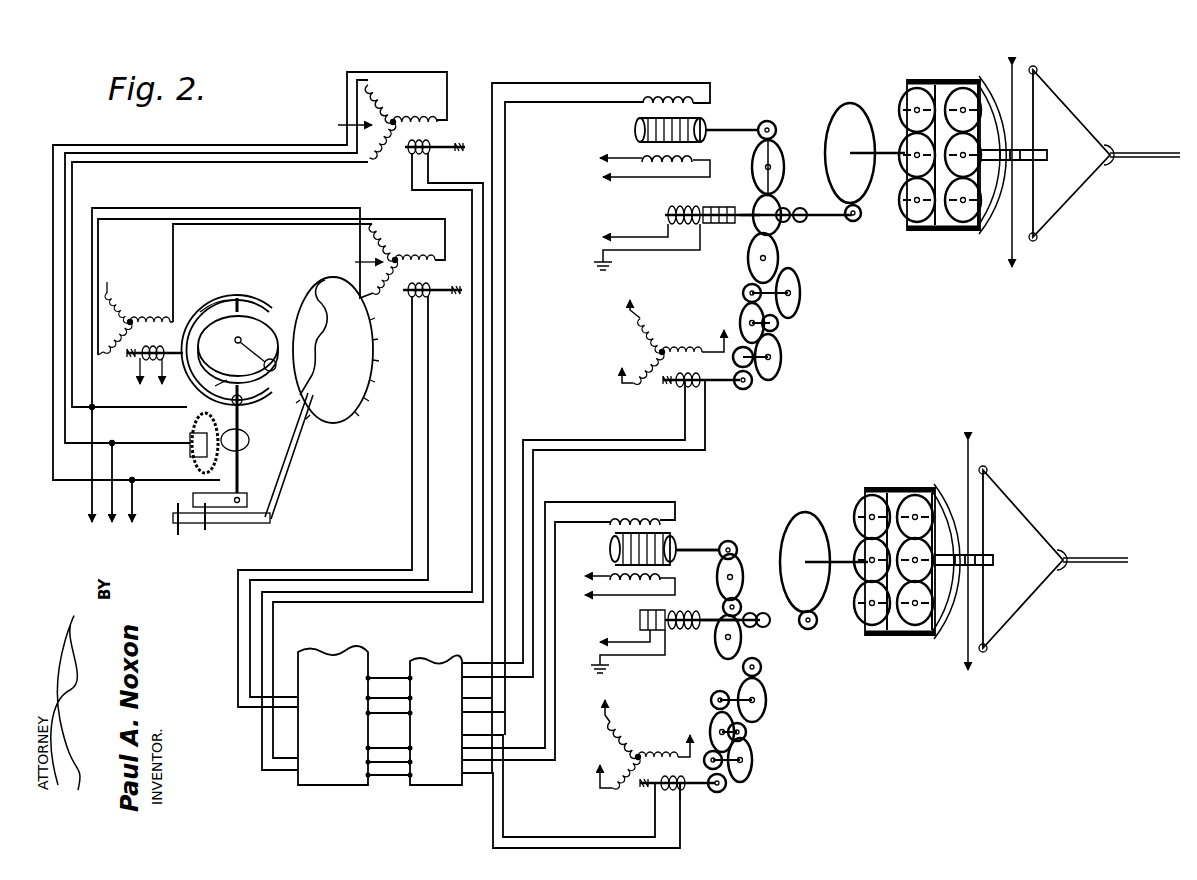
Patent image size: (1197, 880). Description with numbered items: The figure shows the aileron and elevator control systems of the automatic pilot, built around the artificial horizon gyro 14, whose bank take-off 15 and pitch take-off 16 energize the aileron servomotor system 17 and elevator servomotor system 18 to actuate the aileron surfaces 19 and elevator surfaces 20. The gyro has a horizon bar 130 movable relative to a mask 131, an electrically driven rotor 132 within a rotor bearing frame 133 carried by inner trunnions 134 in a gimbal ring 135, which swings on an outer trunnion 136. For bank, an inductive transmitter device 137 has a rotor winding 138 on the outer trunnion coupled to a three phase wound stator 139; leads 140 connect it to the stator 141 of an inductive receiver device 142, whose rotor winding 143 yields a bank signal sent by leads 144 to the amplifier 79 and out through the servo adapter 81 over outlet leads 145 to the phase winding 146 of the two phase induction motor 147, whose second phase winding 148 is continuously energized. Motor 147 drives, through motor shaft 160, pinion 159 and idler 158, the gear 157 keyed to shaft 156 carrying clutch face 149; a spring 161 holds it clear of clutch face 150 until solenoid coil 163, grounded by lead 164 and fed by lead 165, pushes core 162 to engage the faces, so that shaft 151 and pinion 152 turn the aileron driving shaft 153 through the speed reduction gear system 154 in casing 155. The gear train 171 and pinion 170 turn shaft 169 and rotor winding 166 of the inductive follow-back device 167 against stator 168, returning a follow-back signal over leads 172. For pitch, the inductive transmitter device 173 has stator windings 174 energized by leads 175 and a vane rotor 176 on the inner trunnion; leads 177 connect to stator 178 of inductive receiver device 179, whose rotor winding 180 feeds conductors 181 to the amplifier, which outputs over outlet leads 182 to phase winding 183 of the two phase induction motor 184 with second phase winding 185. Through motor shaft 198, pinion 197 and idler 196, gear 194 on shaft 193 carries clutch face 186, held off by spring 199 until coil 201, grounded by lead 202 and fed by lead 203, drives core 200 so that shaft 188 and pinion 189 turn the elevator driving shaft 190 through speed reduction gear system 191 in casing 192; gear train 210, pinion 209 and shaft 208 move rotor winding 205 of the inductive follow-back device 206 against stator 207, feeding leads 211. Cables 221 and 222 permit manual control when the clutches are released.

The artificial horizon gyro 14 is at (259, 310).
The bank take-off 15 is at (155, 355).
The pitch take-off 16 is at (244, 403).
The aileron servomotor system 17 is at (790, 112).
The elevator servomotor system 18 is at (776, 512).
The aileron surfaces 19 is at (1140, 159).
The elevator surfaces 20 is at (1110, 563).
The amplifier 79 is at (333, 715).
The servo adapter 81 is at (436, 720).
The horizon bar 130 is at (292, 462).
The mask 131 is at (358, 402).
The rotor 132 is at (247, 354).
The rotor bearing frame 133 is at (238, 349).
The inner trunnions 134 is at (237, 298).
The gimbal ring 135 is at (198, 312).
The outer trunnion 136 is at (215, 386).
The inductive transmitter device 137 is at (112, 290).
The rotor winding 138 is at (136, 360).
The three phase wound stator 139 is at (150, 315).
The leads 140 is at (248, 216).
The three phase wound stator 141 is at (410, 258).
The inductive receiver device 142 is at (351, 258).
The rotor winding 143 is at (410, 296).
The leads 144 is at (412, 524).
The outlet leads 145 is at (508, 390).
The phase winding 146 is at (665, 98).
The two phase induction motor 147 is at (636, 137).
The second phase winding 148 is at (660, 166).
The clutch face 149 is at (828, 152).
The clutch face 150 is at (804, 222).
The shaft 151 is at (789, 210).
The pinion 152 is at (857, 222).
The aileron driving shaft 153 is at (1030, 152).
The speed reduction gear system 154 is at (900, 118).
The casing 155 is at (930, 230).
The shaft 156 is at (755, 208).
The gear 157 is at (779, 262).
The idler 158 is at (780, 150).
The pinion 159 is at (767, 118).
The motor shaft 160 is at (732, 125).
The resilient spring 161 is at (755, 226).
The core 162 is at (710, 207).
The solenoid coil 163 is at (665, 218).
The lead 164 is at (660, 252).
The lead 165 is at (596, 236).
The rotor winding 166 is at (680, 388).
The inductive follow-back device 167 is at (778, 662).
The three phase wound stator 168 is at (688, 348).
The shaft 169 is at (712, 400).
The pinion 170 is at (752, 386).
The speed reduction gear train 171 is at (790, 340).
The leads 172 is at (545, 492).
The inductive transmitter device 173 is at (196, 433).
The stator windings 174 is at (190, 452).
The leads 175 is at (92, 505).
The rotor 176 is at (248, 438).
The leads 177 is at (62, 180).
The three phase wound stator 178 is at (405, 115).
The inductive receiver device 179 is at (335, 123).
The rotor winding 180 is at (410, 153).
The conductors 181 is at (478, 443).
The outlet leads 182 is at (548, 700).
The phase winding 183 is at (640, 515).
The two phase induction motor 184 is at (612, 548).
The second phase winding 185 is at (608, 575).
The clutch face 186 is at (753, 613).
The shaft 188 is at (771, 626).
The pinion 189 is at (816, 623).
The elevator driving shaft 190 is at (995, 558).
The speed reduction gear system 191 is at (816, 520).
The casing 192 is at (905, 636).
The shaft 193 is at (722, 607).
The gear 194 is at (716, 651).
The idler 196 is at (741, 565).
The pinion 197 is at (730, 540).
The motor shaft 198 is at (705, 548).
The resilient spring 199 is at (712, 630).
The core 200 is at (645, 616).
The coil 201 is at (662, 648).
The lead 202 is at (606, 673).
The lead 203 is at (615, 641).
The rotor winding 205 is at (655, 812).
The inductive follow-back device 206 is at (615, 755).
The three phase wound stator 207 is at (650, 748).
The shaft 208 is at (681, 810).
The pinion 209 is at (728, 789).
The speed reduction gear train 210 is at (766, 752).
The leads 211 is at (497, 817).
The cable 221 is at (1008, 242).
The cable 222 is at (964, 658).